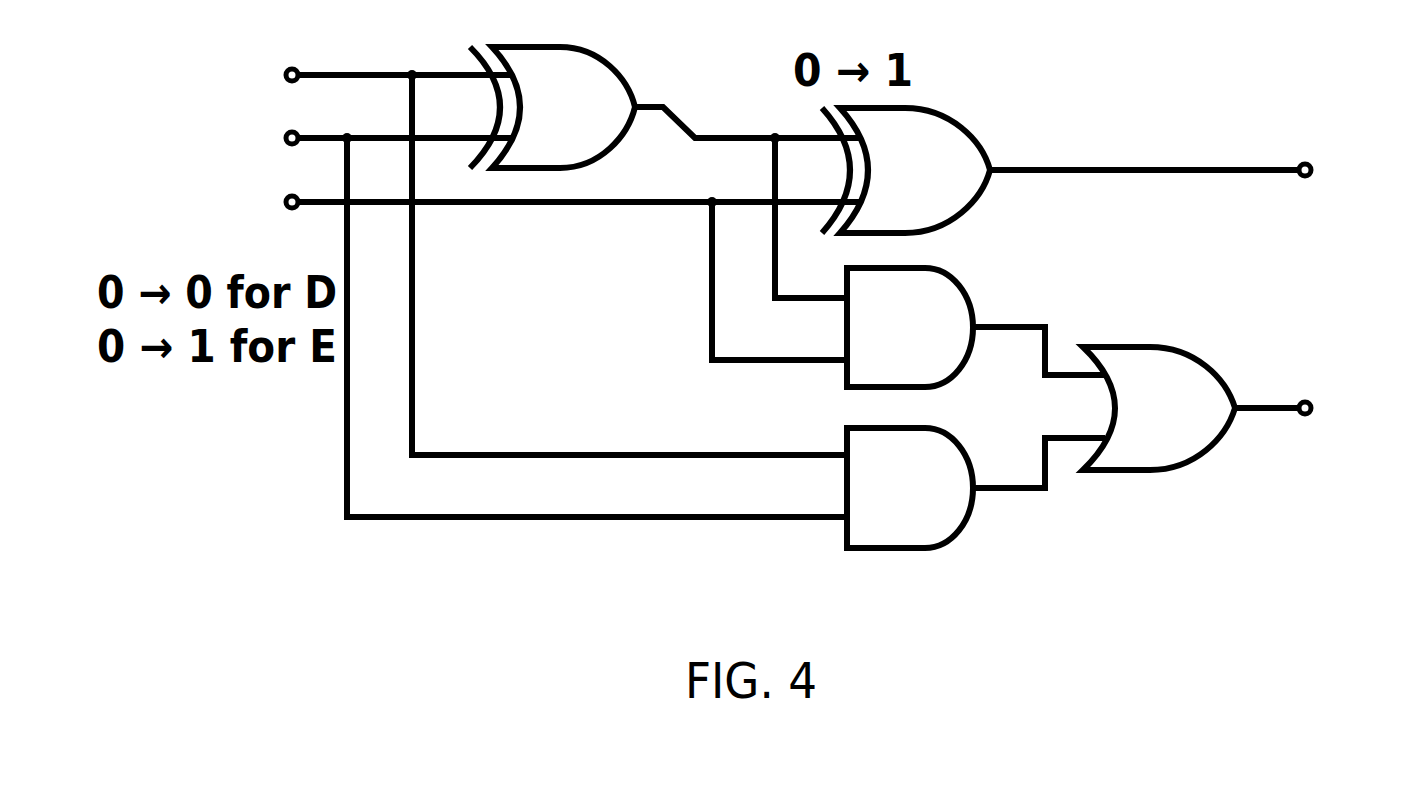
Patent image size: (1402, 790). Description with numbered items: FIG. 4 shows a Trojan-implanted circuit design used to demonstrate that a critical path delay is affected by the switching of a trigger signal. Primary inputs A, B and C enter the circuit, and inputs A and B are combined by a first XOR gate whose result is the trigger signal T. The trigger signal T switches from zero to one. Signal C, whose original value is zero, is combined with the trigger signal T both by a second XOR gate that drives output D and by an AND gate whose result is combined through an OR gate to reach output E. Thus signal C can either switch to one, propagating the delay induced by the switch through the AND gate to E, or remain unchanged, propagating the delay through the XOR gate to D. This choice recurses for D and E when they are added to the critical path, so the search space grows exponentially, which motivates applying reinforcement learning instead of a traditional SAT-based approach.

The input signal A is at (531, 250).
The input signal B is at (531, 319).
The signal C is at (539, 276).
The trigger signal T is at (748, 171).
The output D is at (1182, 171).
The output E is at (1303, 409).